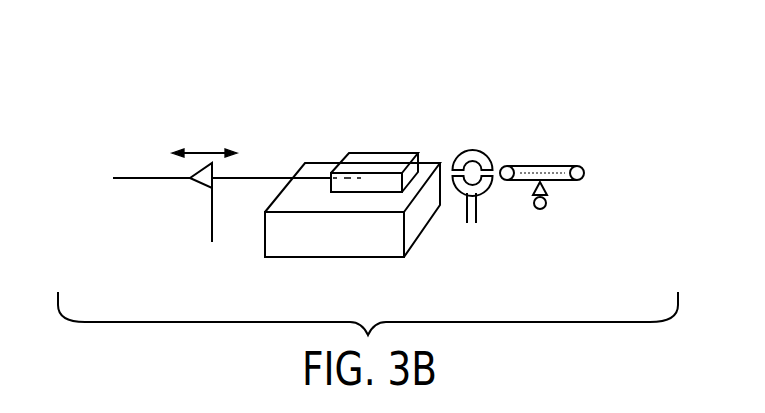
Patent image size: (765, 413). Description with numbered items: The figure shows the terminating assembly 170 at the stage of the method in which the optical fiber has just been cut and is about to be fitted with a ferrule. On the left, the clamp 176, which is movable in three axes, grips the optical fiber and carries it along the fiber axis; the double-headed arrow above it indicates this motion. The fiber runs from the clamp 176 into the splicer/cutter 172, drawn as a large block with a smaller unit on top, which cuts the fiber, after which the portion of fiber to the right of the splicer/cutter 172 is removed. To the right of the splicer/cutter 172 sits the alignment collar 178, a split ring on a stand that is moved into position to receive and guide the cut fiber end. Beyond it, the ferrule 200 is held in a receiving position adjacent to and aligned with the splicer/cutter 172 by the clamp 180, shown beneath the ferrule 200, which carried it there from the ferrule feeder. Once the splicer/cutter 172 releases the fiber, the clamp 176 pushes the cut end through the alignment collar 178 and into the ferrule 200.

The terminating assembly 170 is at (578, 111).
The splicer/cutter 172 is at (425, 210).
The clamp 176 is at (202, 187).
The alignment collar 178 is at (478, 155).
The clamp 180 is at (548, 200).
The ferrule 200 is at (562, 168).